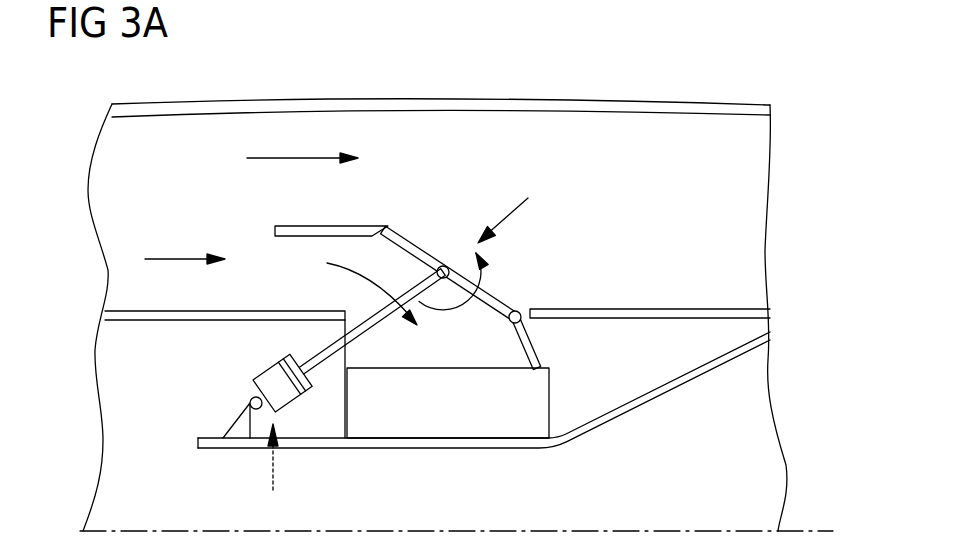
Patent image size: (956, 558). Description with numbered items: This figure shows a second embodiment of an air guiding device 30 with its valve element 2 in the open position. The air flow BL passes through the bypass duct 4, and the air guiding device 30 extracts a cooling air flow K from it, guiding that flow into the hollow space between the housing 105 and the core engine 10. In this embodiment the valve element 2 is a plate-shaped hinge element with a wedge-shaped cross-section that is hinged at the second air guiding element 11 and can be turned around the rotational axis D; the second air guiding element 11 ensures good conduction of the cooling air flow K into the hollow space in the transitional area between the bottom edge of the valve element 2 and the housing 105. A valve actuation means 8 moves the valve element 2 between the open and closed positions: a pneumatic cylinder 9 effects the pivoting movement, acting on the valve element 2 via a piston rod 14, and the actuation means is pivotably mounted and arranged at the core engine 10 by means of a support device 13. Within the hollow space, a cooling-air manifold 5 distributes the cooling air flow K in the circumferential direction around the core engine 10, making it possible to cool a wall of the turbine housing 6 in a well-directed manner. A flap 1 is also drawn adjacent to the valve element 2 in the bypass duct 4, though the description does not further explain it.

The flap 1 is at (338, 233).
The valve element 2 is at (425, 260).
The bypass duct 4 is at (669, 201).
The cooling-air manifold 5 is at (522, 397).
The turbine housing 6 is at (677, 385).
The valve actuation means 8 is at (274, 473).
The pneumatic cylinder 9 is at (268, 380).
The core engine 10 is at (650, 502).
The second air guiding element 11 is at (523, 313).
The support device 13 is at (242, 425).
The piston rod 14 is at (327, 357).
The air guiding device 30 is at (520, 208).
The housing 105 is at (188, 315).
The air flow BL is at (251, 197).
The rotational axis D is at (453, 275).
The cooling air flow K is at (372, 286).